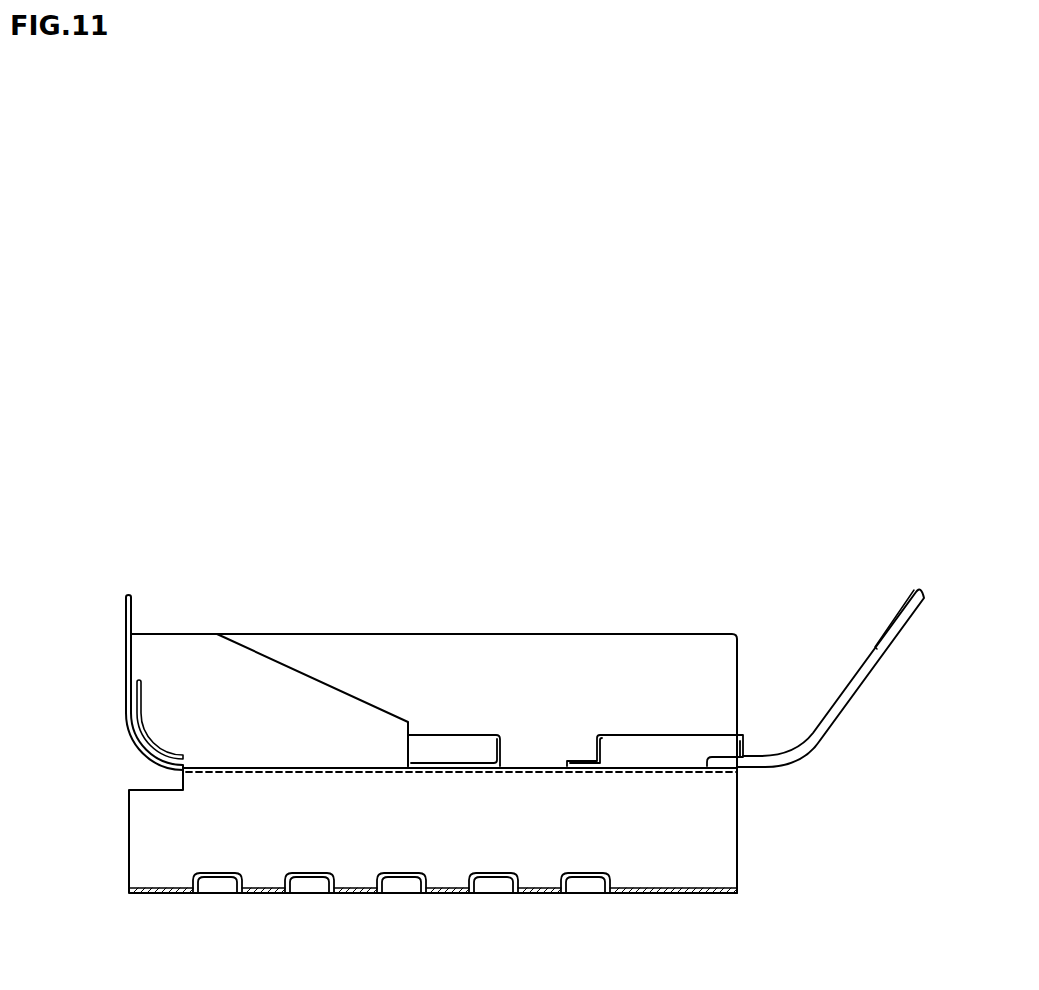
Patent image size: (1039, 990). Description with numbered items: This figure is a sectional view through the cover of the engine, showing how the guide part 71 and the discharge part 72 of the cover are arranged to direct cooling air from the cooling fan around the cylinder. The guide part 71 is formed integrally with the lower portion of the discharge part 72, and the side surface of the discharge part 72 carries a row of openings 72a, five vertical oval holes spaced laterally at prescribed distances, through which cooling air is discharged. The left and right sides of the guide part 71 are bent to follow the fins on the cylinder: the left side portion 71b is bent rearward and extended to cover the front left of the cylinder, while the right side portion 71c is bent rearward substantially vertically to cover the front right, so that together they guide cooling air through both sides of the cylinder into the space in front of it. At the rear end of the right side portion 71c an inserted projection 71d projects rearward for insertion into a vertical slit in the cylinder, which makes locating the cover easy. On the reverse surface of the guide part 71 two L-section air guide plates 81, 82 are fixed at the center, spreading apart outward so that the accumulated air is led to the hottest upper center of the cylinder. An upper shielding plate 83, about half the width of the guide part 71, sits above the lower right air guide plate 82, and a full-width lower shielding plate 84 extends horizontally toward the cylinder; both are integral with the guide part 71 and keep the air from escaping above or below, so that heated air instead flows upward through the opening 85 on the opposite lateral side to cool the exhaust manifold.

The guide part 71 is at (163, 770).
The left side portion 71b is at (858, 695).
The right side portion 71c is at (127, 692).
The inserted projection 71d is at (125, 607).
The discharge part 72 is at (737, 870).
The openings 72a is at (395, 893).
The air guide plate 81 is at (623, 733).
The air guide plate 82 is at (452, 733).
The upper shielding plate 83 is at (322, 677).
The lower shielding plate 84 is at (713, 632).
The opening 85 is at (531, 767).